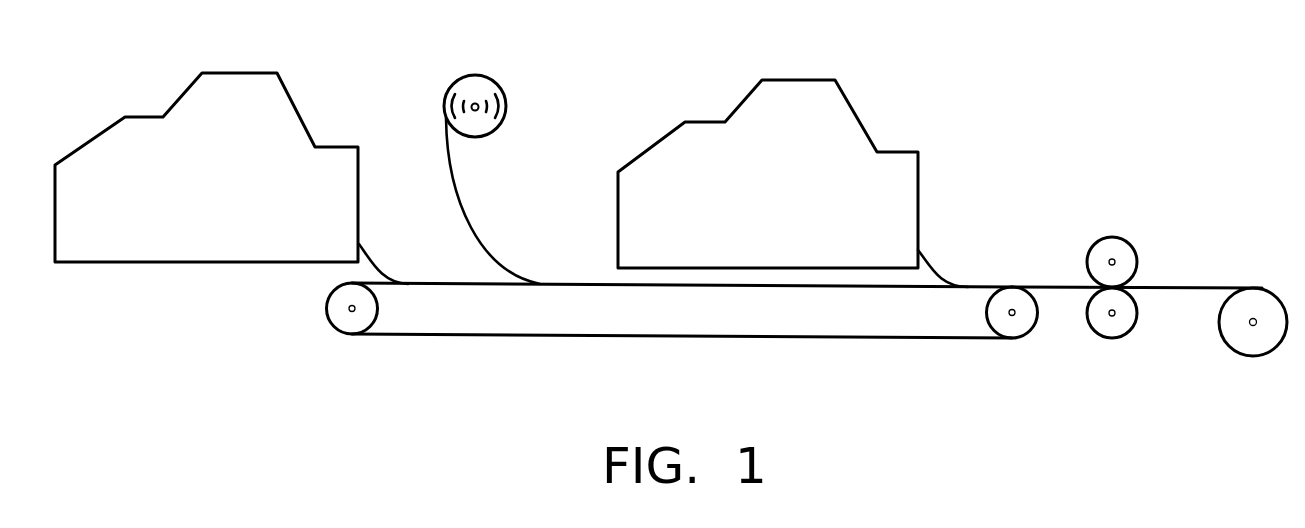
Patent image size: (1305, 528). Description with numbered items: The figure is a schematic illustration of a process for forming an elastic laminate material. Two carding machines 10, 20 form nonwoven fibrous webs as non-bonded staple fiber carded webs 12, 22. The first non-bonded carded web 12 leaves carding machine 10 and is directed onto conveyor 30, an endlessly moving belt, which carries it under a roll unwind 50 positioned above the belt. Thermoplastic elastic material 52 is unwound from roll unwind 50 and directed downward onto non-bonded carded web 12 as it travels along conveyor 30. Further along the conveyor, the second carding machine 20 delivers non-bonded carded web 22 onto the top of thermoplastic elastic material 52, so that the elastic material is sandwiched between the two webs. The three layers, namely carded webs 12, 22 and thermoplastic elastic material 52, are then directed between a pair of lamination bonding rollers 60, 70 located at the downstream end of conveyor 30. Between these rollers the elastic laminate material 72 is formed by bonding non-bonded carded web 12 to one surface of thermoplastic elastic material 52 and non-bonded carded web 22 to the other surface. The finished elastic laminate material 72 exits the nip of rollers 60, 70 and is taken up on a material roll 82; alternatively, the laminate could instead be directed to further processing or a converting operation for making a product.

The carding machine 10 is at (187, 92).
The non-bonded carded web 12 is at (373, 254).
The carding machine 20 is at (749, 95).
The non-bonded carded web 22 is at (932, 258).
The conveyor 30 is at (405, 338).
The roll unwind 50 is at (483, 75).
The thermoplastic elastic material 52 is at (464, 201).
The lamination bonding roller 60 is at (1112, 237).
The lamination bonding roller 70 is at (1112, 339).
The elastic laminate material 72 is at (1195, 287).
The material roll 82 is at (1250, 357).